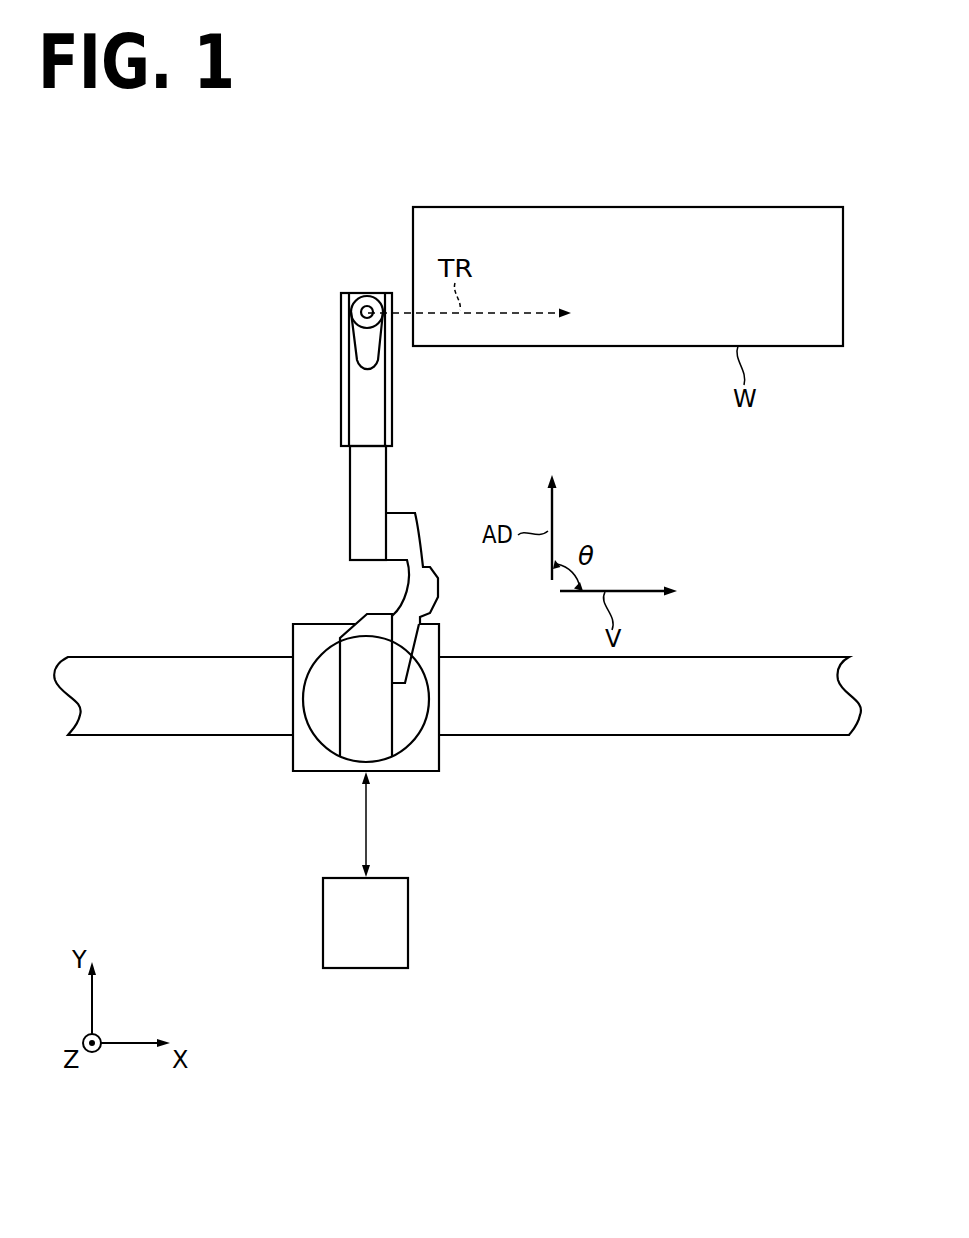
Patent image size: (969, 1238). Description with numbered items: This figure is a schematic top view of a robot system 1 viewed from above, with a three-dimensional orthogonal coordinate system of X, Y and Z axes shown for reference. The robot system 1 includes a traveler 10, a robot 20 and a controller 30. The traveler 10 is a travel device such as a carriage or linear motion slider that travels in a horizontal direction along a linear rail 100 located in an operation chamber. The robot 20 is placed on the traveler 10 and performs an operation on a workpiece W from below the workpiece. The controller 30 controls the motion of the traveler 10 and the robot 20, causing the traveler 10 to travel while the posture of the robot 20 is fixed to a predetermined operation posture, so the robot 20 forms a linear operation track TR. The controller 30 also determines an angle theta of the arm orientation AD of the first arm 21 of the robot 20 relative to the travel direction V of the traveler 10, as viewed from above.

The robot system 1 is at (223, 493).
The traveler 10 is at (441, 771).
The robot 20 is at (387, 485).
The first arm 21 is at (424, 580).
The controller 30 is at (408, 921).
The linear rail 100 is at (170, 657).